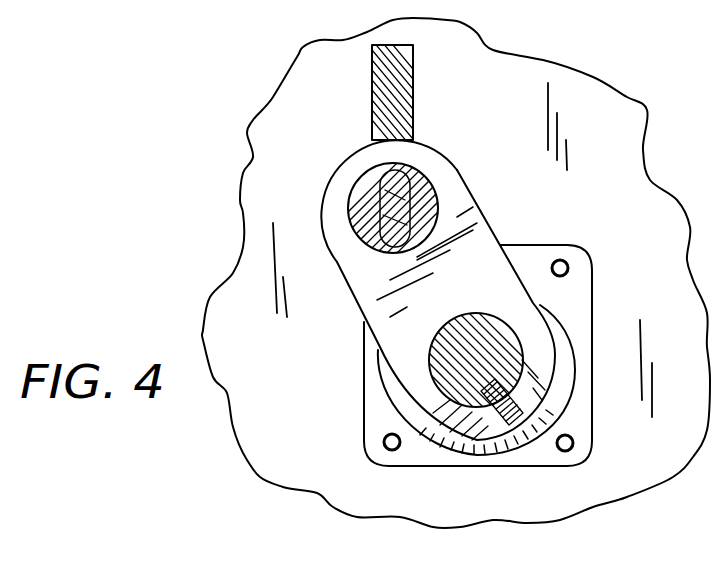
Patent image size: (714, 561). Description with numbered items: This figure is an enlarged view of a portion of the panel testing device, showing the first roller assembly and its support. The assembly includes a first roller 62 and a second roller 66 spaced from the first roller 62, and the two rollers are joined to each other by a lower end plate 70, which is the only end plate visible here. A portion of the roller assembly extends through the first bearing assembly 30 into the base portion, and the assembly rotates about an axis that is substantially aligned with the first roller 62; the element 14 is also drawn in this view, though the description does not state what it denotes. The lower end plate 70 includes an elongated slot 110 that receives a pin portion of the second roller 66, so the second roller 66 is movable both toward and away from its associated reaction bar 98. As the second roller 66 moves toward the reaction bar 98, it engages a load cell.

The shaft 14 is at (427, 163).
The first bearing assembly 30 is at (373, 417).
The first roller 62 is at (508, 336).
The second roller 66 is at (363, 230).
The lower end plate 70 is at (500, 244).
The reaction bar 98 is at (413, 80).
The elongated slot 110 is at (341, 155).